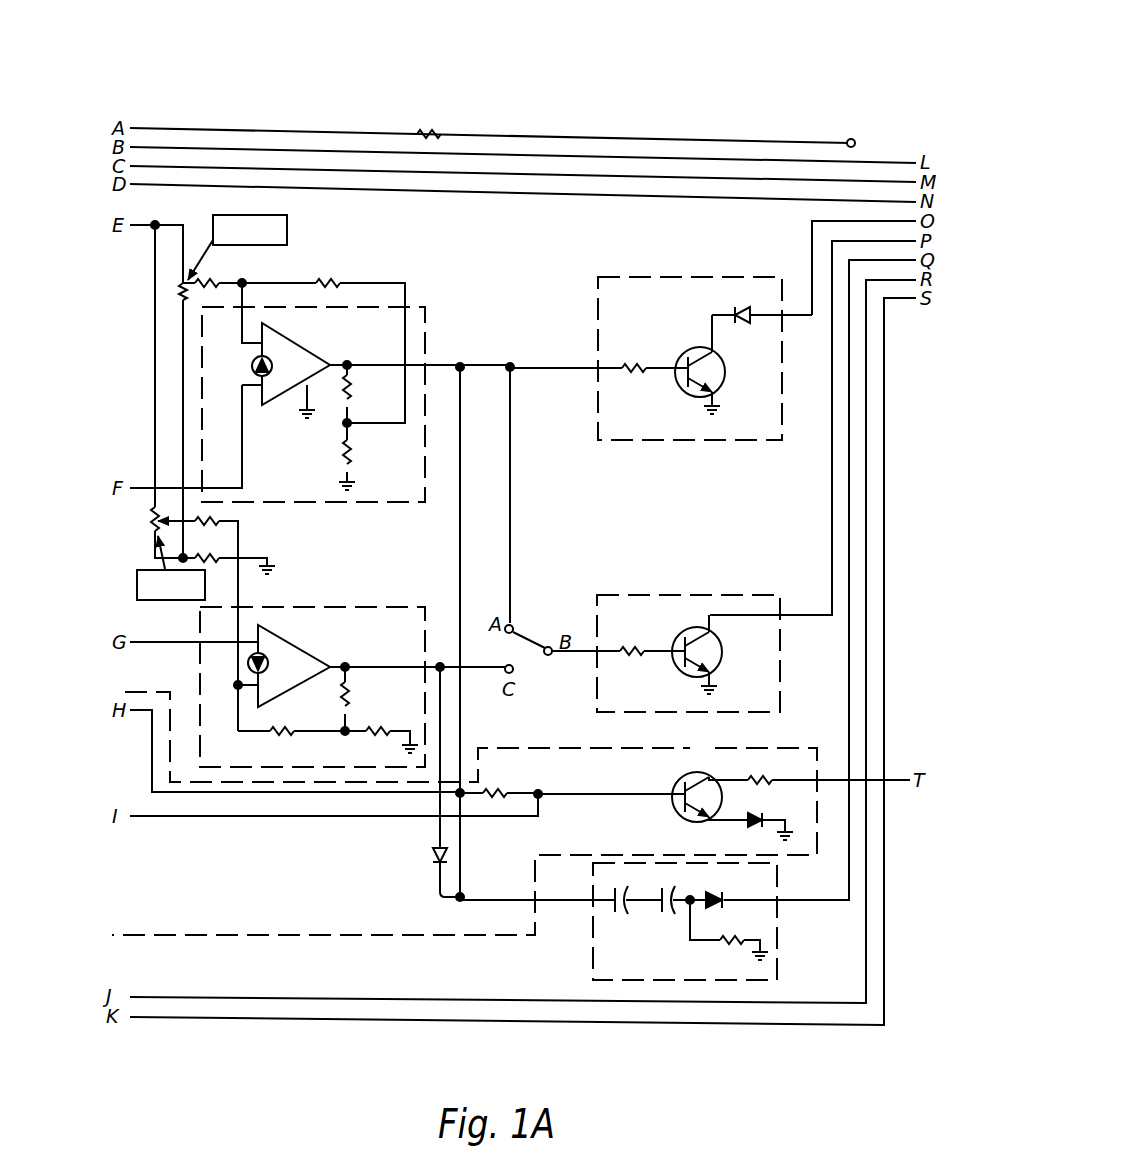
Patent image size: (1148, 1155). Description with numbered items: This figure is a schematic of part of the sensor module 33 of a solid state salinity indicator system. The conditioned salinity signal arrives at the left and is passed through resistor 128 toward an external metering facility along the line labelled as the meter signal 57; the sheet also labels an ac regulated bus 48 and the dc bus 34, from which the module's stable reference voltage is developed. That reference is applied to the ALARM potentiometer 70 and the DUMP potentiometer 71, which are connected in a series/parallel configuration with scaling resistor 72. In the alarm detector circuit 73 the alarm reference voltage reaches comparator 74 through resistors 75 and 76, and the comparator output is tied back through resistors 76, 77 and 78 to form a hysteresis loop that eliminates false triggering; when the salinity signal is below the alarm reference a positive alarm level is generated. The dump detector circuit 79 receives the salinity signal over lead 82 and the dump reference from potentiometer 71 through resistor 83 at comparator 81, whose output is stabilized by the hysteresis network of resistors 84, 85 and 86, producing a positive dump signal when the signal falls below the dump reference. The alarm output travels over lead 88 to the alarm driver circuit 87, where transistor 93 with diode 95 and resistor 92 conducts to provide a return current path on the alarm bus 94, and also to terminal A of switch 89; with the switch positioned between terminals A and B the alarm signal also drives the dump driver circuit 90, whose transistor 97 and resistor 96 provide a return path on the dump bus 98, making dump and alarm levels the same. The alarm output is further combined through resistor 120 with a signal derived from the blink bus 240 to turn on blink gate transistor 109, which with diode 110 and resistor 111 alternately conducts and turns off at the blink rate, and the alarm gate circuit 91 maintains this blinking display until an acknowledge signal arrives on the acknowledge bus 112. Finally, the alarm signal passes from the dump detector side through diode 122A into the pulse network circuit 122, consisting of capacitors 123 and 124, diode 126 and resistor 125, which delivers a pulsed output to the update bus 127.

The sensor module 33 is at (492, 97).
The resistor 128 is at (434, 132).
The meter signal line 57 is at (643, 156).
The AC regulated buss 48 is at (680, 175).
The dc bus 34 is at (606, 190).
The alarm bus 94 is at (807, 219).
The dump bus 98 is at (816, 611).
The update bus 127 is at (860, 497).
The blink bus 240 is at (878, 521).
The acknowledge bus 112 is at (659, 1033).
The ALARM potentiometer 70 is at (180, 283).
The DUMP potentiometer 71 is at (163, 511).
The resistor 75 is at (208, 281).
The resistor 76 is at (318, 280).
The alarm detector circuit 73 is at (412, 297).
The comparator 74 is at (303, 346).
The resistor 77 is at (356, 398).
The resistor 78 is at (356, 454).
The resistor 83 is at (217, 514).
The scaling resistor 72 is at (207, 549).
The dump detector circuit 79 is at (406, 606).
The lead 82 is at (164, 641).
The comparator 81 is at (319, 648).
The resistor 84 is at (291, 726).
The resistor 85 is at (356, 704).
The resistor 86 is at (379, 731).
The lead 88 is at (563, 365).
The alarm driver circuit 87 is at (763, 276).
The resistor 92 is at (629, 381).
The alarm driver transistor 93 is at (733, 360).
The diode 95 is at (743, 313).
The switch 89 is at (540, 640).
The dump driver circuit 90 is at (676, 578).
The resistor 96 is at (637, 662).
The transistor 97 is at (725, 653).
The resistor 120 is at (492, 794).
The alarm gate circuit 91 is at (679, 750).
The blink gate transistor 109 is at (673, 787).
The resistor 111 is at (752, 778).
The diode 110 is at (758, 812).
The diode 122A is at (430, 858).
The pulse network circuit 122 is at (781, 967).
The capacitor 123 is at (617, 916).
The capacitor 124 is at (677, 897).
The diode 126 is at (717, 897).
The resistor 125 is at (729, 937).